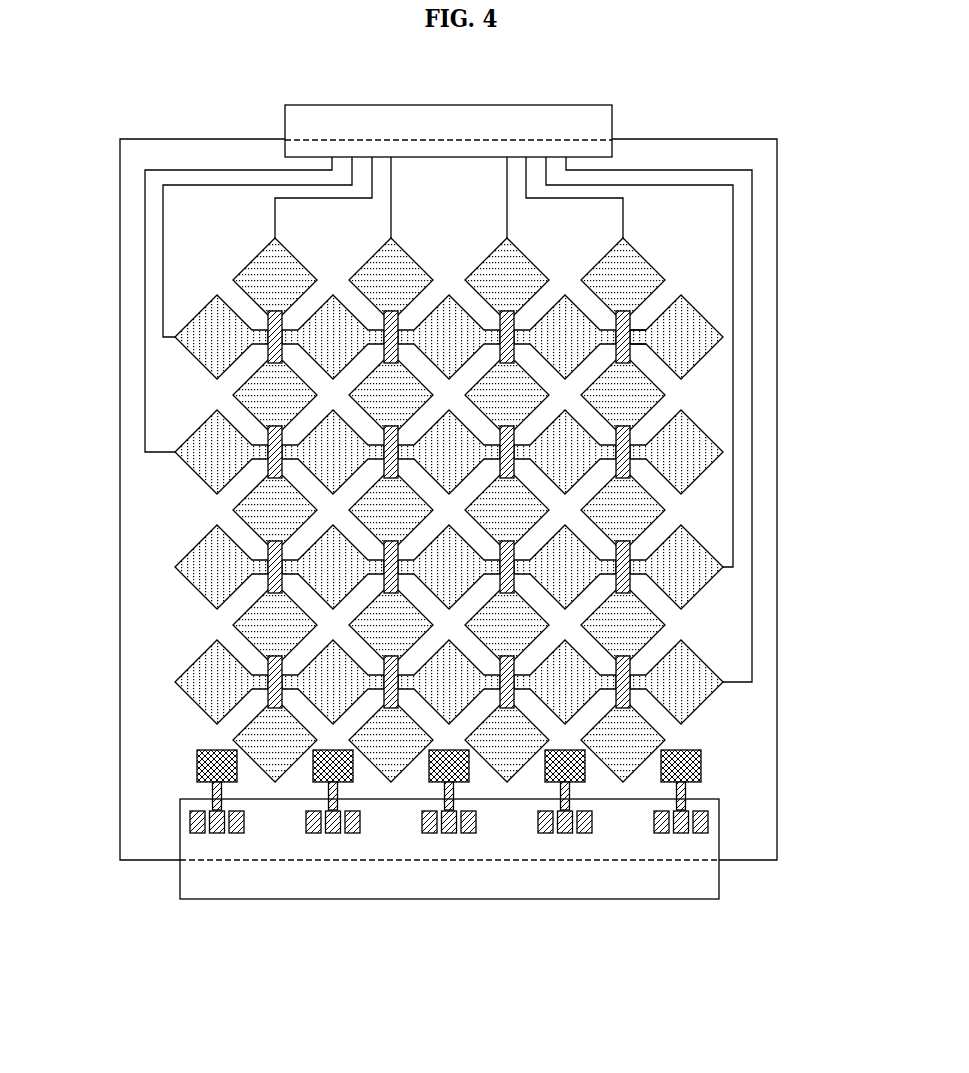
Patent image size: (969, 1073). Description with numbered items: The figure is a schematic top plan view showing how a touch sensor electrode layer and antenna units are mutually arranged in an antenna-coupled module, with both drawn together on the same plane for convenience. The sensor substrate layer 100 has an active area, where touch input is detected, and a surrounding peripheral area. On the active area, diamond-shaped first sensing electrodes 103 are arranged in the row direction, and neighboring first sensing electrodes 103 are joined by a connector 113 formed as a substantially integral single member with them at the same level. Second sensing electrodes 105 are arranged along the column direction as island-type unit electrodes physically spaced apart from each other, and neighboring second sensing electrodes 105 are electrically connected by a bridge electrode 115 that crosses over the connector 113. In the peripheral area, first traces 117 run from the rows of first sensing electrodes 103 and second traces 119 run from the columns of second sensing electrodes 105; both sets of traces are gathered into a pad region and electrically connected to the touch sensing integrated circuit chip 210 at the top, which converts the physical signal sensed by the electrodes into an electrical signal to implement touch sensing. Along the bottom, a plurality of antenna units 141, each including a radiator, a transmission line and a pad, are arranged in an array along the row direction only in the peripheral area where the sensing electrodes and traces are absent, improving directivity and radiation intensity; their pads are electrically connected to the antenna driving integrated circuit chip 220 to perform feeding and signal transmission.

The sensor substrate layer 100 is at (777, 733).
The first sensing electrodes 103 is at (690, 318).
The second sensing electrodes 105 is at (628, 257).
The connector 113 is at (634, 343).
The bridge electrode 115 is at (625, 307).
The first traces 117 is at (198, 183).
The second traces 119 is at (370, 183).
The antenna unit 141 is at (204, 790).
The touch sensing integrated circuit chip 210 is at (540, 118).
The antenna driving integrated circuit chip 220 is at (719, 880).